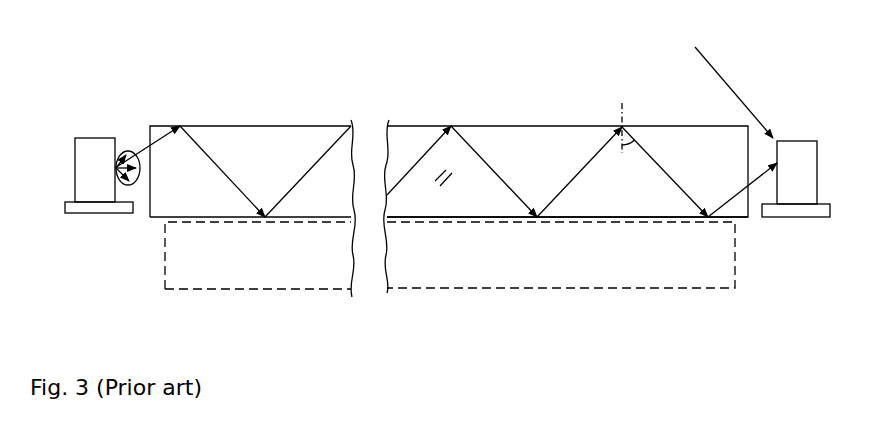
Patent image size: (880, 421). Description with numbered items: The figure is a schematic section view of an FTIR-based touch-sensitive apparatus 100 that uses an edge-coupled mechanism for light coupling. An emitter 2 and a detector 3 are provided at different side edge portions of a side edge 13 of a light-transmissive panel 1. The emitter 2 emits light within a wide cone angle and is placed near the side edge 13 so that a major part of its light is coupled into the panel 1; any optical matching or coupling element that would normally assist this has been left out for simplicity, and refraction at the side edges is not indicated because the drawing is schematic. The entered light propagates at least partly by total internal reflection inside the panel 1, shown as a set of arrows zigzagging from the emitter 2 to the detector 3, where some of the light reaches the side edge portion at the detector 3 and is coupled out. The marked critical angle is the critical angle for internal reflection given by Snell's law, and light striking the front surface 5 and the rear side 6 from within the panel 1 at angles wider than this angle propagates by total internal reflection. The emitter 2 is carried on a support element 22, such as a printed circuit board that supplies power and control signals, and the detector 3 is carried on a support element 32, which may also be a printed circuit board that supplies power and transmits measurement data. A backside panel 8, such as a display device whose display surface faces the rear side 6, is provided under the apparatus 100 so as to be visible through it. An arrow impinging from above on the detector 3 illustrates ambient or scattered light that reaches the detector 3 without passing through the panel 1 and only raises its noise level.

The light-transmissive panel 1 is at (539, 138).
The emitter 2 is at (88, 184).
The detector 3 is at (787, 158).
The front surface 5 is at (208, 124).
The rear side 6 is at (439, 223).
The backside panel 8 is at (307, 266).
The side edge 13 is at (156, 172).
The support element 22 is at (72, 213).
The support element 32 is at (797, 207).
The touch-sensitive apparatus 100 is at (270, 112).